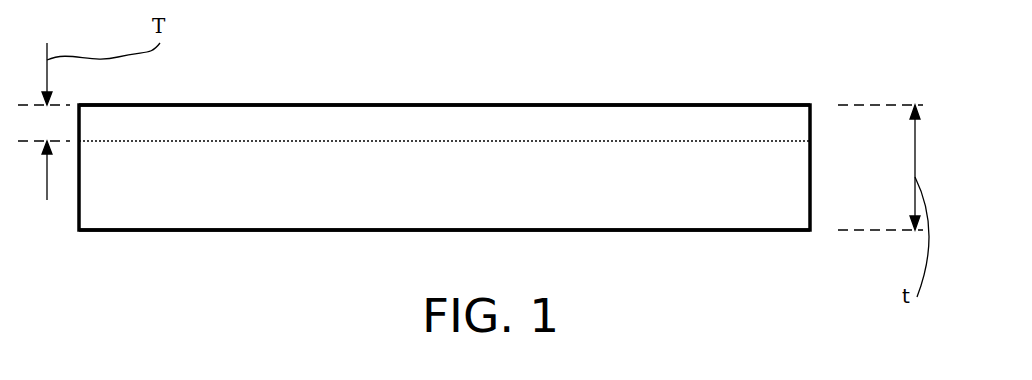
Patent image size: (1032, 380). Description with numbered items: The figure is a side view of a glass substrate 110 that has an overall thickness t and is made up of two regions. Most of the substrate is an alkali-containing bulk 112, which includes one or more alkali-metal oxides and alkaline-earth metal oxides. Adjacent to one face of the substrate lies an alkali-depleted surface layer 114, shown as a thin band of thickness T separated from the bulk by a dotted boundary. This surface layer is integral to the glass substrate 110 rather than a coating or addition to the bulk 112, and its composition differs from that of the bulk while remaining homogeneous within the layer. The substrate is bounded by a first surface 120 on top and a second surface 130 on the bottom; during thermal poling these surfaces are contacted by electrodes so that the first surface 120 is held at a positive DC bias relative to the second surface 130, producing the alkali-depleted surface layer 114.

The glass substrate 110 is at (465, 178).
The alkali-containing bulk 112 is at (818, 141).
The alkali-depleted surface layer 114 is at (818, 105).
The first surface 120 is at (332, 105).
The second surface 130 is at (330, 230).